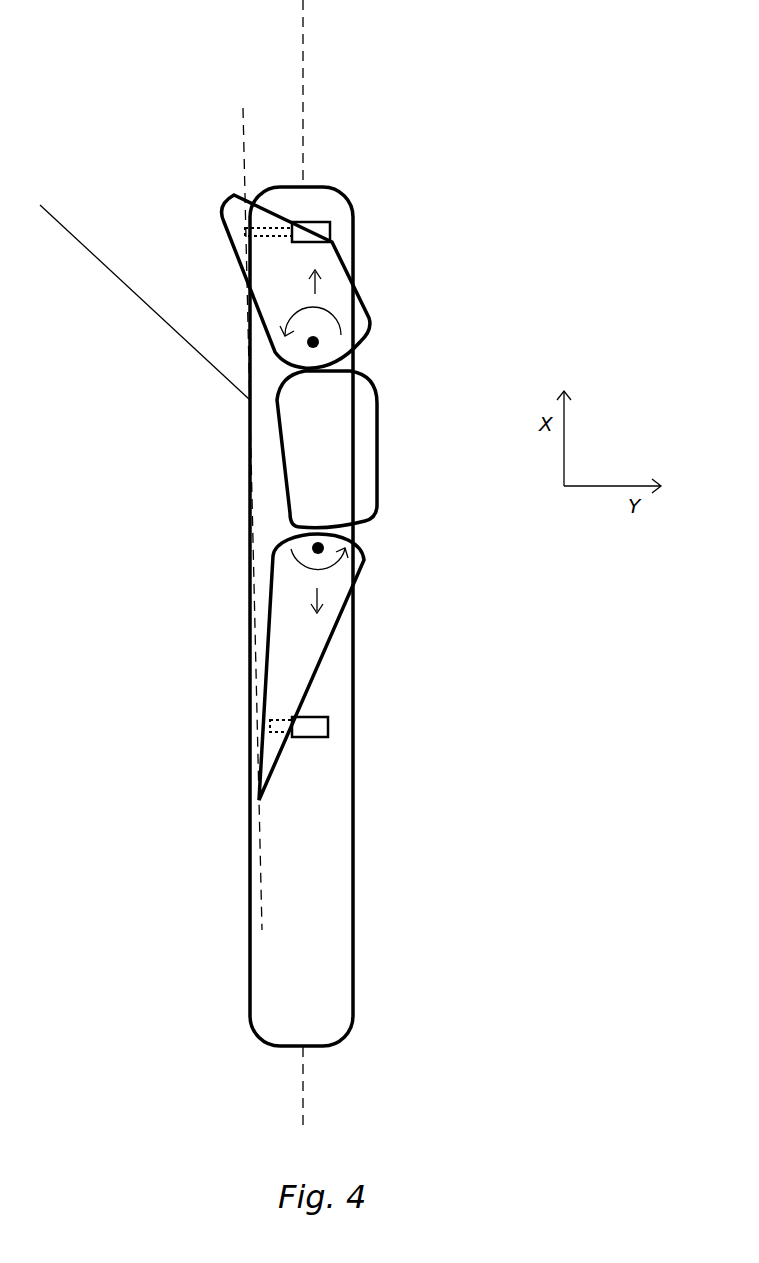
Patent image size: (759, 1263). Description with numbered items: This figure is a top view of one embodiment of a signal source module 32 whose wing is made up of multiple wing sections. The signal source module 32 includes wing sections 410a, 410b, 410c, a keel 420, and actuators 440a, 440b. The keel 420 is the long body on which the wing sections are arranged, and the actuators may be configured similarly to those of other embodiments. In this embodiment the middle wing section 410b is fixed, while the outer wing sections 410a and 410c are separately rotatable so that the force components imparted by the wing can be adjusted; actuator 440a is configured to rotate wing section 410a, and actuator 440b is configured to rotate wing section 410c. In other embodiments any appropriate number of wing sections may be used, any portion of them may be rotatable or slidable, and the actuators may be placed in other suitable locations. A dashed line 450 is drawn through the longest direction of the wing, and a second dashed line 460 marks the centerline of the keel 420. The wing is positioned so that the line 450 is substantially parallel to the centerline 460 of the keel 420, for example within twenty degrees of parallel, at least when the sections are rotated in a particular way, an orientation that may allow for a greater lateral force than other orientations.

The signal source module 32 is at (439, 128).
The wing section 410a is at (230, 253).
The wing section 410b is at (377, 447).
The wing section 410c is at (345, 615).
The keel 420 is at (353, 767).
The actuator 440a is at (330, 232).
The actuator 440b is at (328, 727).
The dashed line 450 is at (243, 130).
The dashed line 460 is at (303, 13).